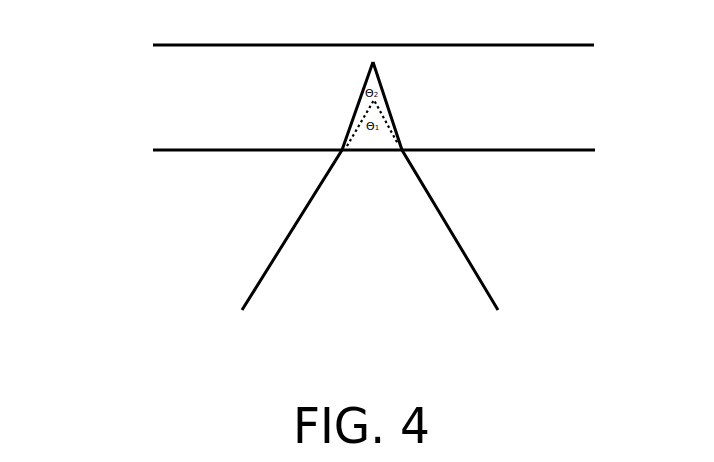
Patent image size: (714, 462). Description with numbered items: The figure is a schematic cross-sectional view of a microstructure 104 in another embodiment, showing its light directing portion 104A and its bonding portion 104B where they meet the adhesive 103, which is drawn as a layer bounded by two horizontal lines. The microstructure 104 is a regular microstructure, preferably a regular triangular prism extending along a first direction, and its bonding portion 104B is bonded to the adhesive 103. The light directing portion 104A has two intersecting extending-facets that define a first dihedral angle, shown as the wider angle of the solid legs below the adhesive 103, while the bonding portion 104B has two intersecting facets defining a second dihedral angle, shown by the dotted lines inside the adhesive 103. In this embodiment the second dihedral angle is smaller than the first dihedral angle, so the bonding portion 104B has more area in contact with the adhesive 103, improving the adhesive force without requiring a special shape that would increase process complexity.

The adhesive 103 is at (550, 107).
The microstructure 104 is at (350, 243).
The light directing portion 104A is at (445, 290).
The bonding portion 104B is at (350, 127).